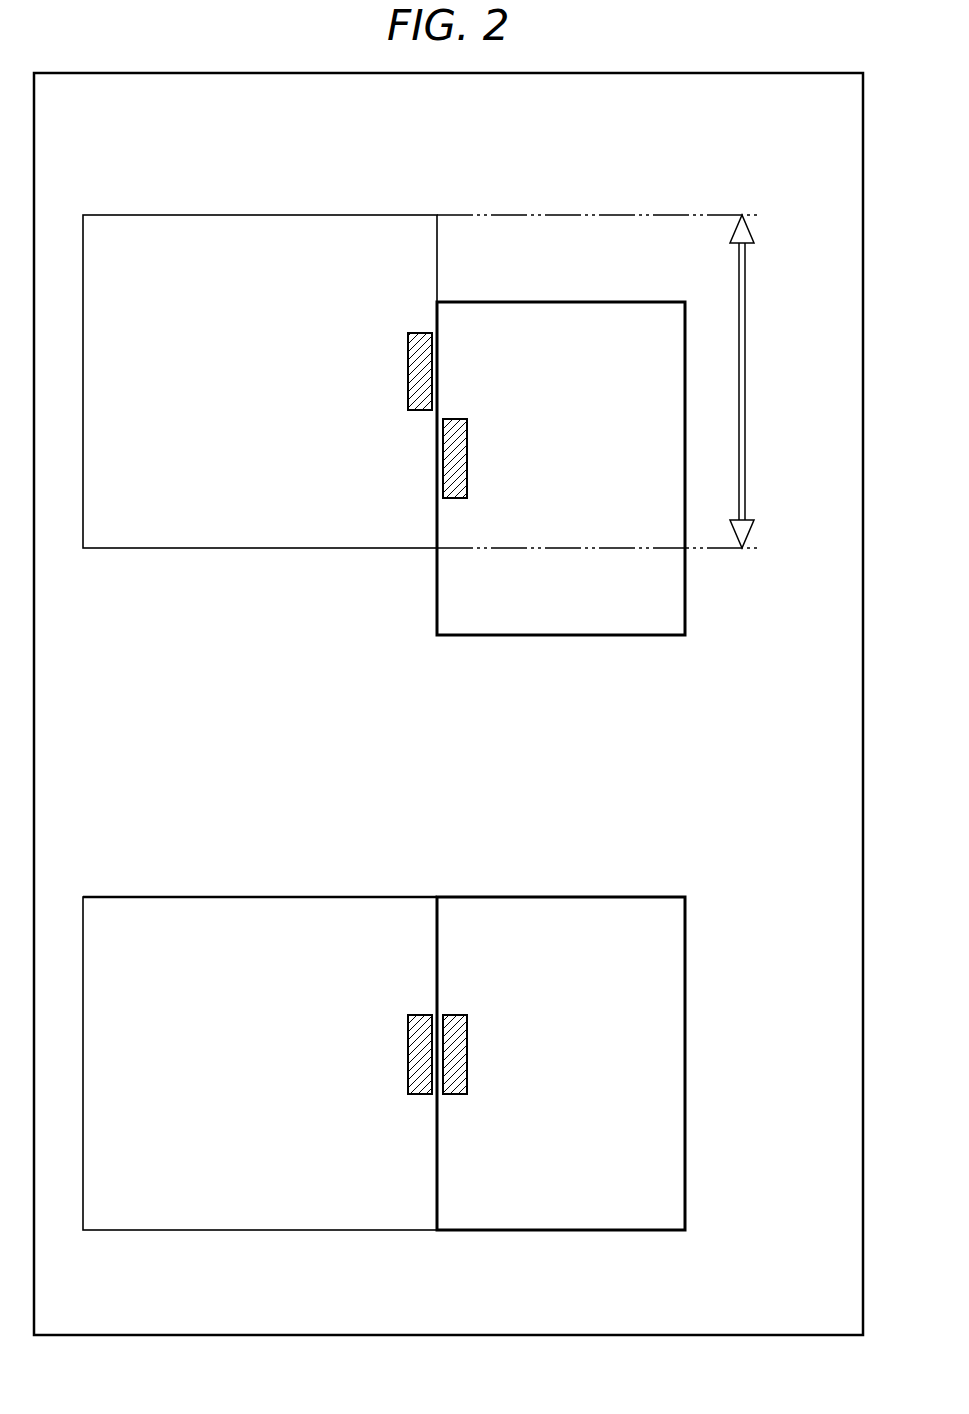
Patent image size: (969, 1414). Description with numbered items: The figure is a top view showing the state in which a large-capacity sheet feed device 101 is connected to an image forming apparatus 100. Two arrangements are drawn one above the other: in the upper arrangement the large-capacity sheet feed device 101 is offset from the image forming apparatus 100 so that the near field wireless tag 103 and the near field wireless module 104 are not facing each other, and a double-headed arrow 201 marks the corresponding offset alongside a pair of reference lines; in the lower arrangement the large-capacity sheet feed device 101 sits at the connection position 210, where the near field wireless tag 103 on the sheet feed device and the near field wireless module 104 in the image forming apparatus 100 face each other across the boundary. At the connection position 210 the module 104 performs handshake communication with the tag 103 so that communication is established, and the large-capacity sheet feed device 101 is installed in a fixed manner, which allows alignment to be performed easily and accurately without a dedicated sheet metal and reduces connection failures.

The image forming apparatus 100 is at (118, 215).
The large-capacity sheet feed device 101 is at (615, 308).
The near field wireless tag 103 is at (458, 498).
The near field wireless module 104 is at (415, 410).
The height of housing 201 is at (746, 332).
The connection position 210 is at (735, 197).